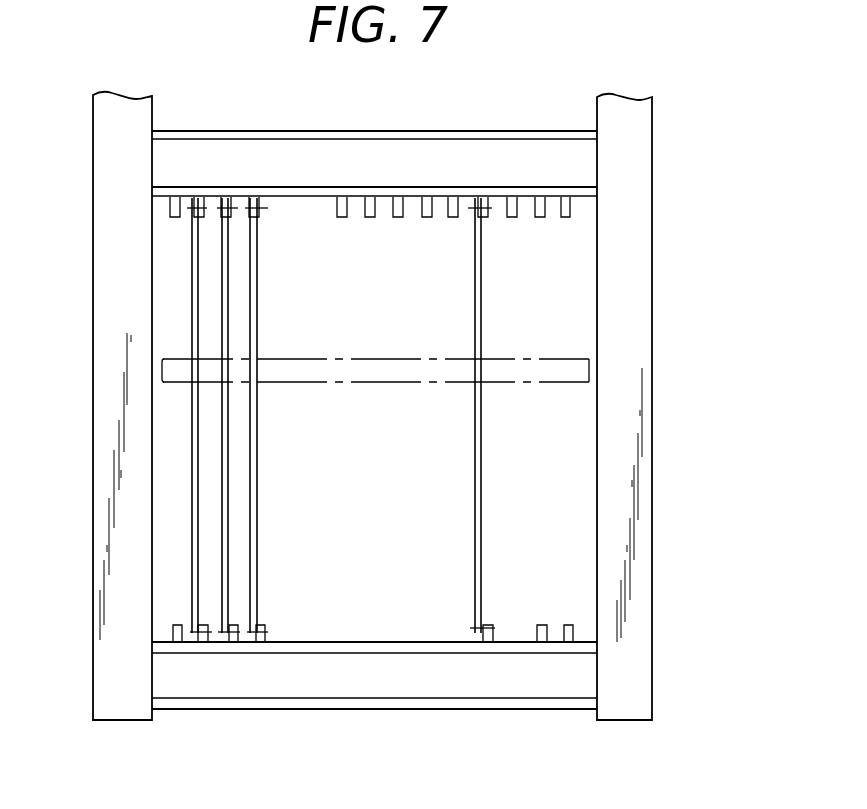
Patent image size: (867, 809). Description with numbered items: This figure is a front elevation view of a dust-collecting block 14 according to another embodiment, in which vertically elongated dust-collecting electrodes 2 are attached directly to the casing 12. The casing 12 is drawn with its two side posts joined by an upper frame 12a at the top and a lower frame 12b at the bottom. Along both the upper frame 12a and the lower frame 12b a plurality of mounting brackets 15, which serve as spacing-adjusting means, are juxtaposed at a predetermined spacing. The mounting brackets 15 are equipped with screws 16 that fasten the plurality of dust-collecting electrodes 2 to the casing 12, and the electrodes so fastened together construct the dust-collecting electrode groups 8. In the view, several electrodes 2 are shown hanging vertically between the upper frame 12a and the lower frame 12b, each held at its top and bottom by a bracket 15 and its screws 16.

The dust-collecting block 14 is at (414, 405).
The casing 12 is at (663, 230).
The upper frame 12a is at (405, 160).
The lower frame 12b is at (408, 677).
The mounting brackets 15 is at (370, 218).
The screws 16 is at (267, 627).
The dust-collecting electrode groups 8 is at (272, 460).
The dust-collecting electrodes 2 is at (482, 462).